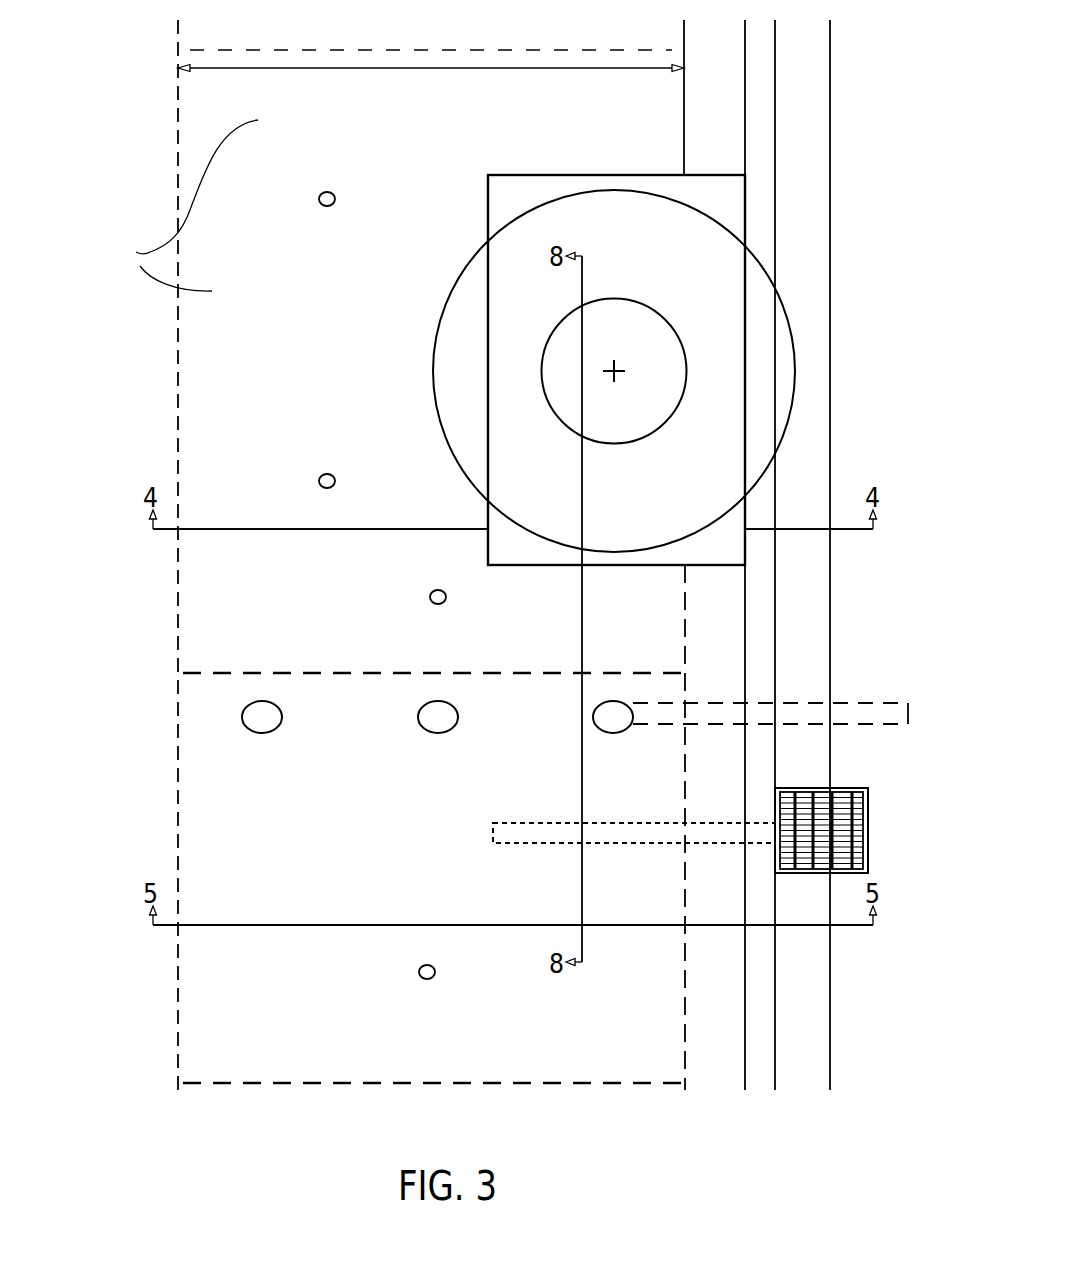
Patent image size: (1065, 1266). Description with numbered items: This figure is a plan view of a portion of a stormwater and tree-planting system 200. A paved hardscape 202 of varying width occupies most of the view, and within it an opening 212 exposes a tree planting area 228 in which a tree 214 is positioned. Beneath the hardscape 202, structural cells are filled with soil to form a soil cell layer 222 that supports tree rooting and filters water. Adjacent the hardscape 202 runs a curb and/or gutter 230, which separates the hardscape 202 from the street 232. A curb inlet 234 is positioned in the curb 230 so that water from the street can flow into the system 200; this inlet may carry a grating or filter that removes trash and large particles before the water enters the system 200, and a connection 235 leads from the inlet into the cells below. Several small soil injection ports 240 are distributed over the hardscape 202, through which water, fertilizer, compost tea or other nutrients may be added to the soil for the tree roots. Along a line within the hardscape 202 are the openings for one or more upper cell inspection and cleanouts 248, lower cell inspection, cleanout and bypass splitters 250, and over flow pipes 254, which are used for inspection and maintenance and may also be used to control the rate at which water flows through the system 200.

The system 200 is at (130, 608).
The hardscape 202 is at (432, 134).
The opening 212 is at (534, 209).
The tree 214 is at (620, 370).
The soil cell layer 222 is at (169, 205).
The tree planting area 228 is at (680, 249).
The curb and/or gutter 230 is at (820, 99).
The street 232 is at (892, 56).
The curb inlet 234 is at (858, 789).
The duct 235 is at (562, 822).
The soil injection ports 240 is at (321, 476).
The upper cell inspection and cleanouts 248 is at (438, 733).
The lower cell inspection, cleanout and bypass splitters 250 is at (262, 733).
The over flow pipes 254 is at (613, 733).